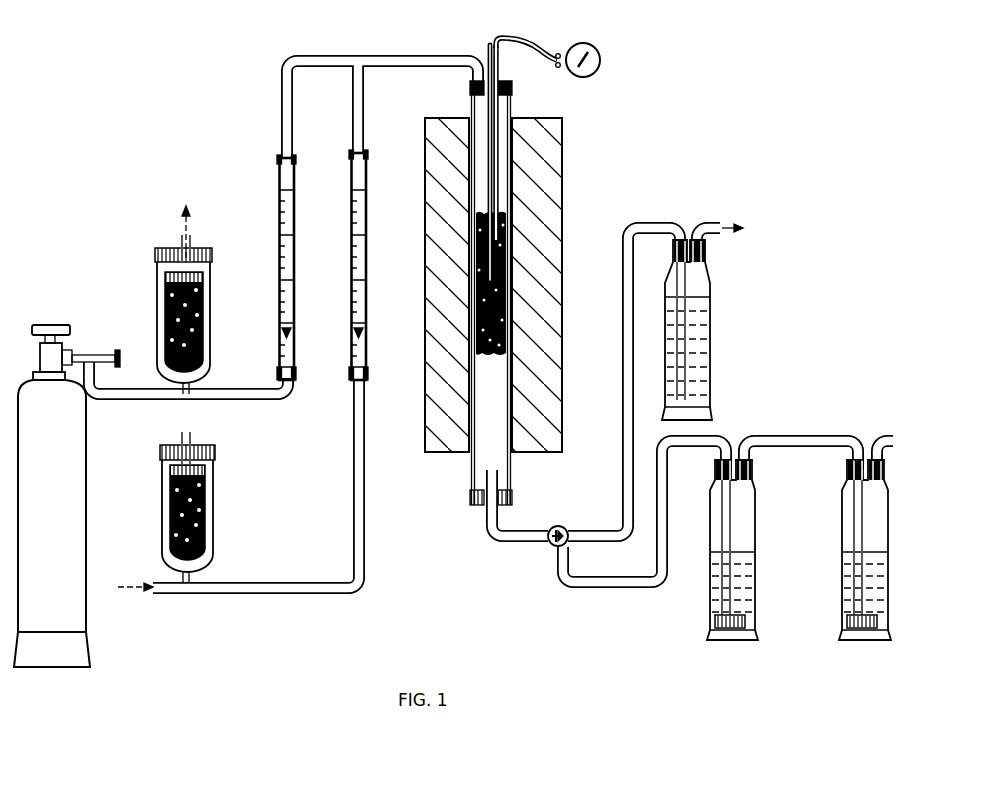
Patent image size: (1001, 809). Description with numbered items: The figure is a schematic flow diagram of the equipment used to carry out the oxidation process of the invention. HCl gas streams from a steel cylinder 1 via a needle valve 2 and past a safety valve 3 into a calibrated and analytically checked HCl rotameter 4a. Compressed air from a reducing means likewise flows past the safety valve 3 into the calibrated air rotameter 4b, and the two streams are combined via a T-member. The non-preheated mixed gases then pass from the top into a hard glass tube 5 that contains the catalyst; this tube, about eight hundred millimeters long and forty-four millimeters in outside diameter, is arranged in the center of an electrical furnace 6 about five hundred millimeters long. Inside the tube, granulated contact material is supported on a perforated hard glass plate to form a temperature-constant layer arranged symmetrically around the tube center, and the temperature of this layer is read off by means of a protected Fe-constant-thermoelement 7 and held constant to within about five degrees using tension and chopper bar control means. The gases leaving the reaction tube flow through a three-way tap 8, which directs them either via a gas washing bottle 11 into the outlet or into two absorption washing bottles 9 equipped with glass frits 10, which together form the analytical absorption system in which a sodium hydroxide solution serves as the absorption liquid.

The steel cylinder 1 is at (72, 458).
The needle valve 2 is at (93, 356).
The safety valve 3 is at (165, 303).
The HCl rotameter 4a is at (283, 190).
The air rotameter 4b is at (355, 190).
The hard glass tube 5 is at (487, 453).
The electrical furnace 6 is at (548, 173).
The Fe-constant-thermoelement 7 is at (502, 46).
The three-way tap 8 is at (552, 548).
The absorption washing bottles 9 is at (748, 518).
The glass frits 10 is at (746, 623).
The gas washing bottle 11 is at (700, 288).